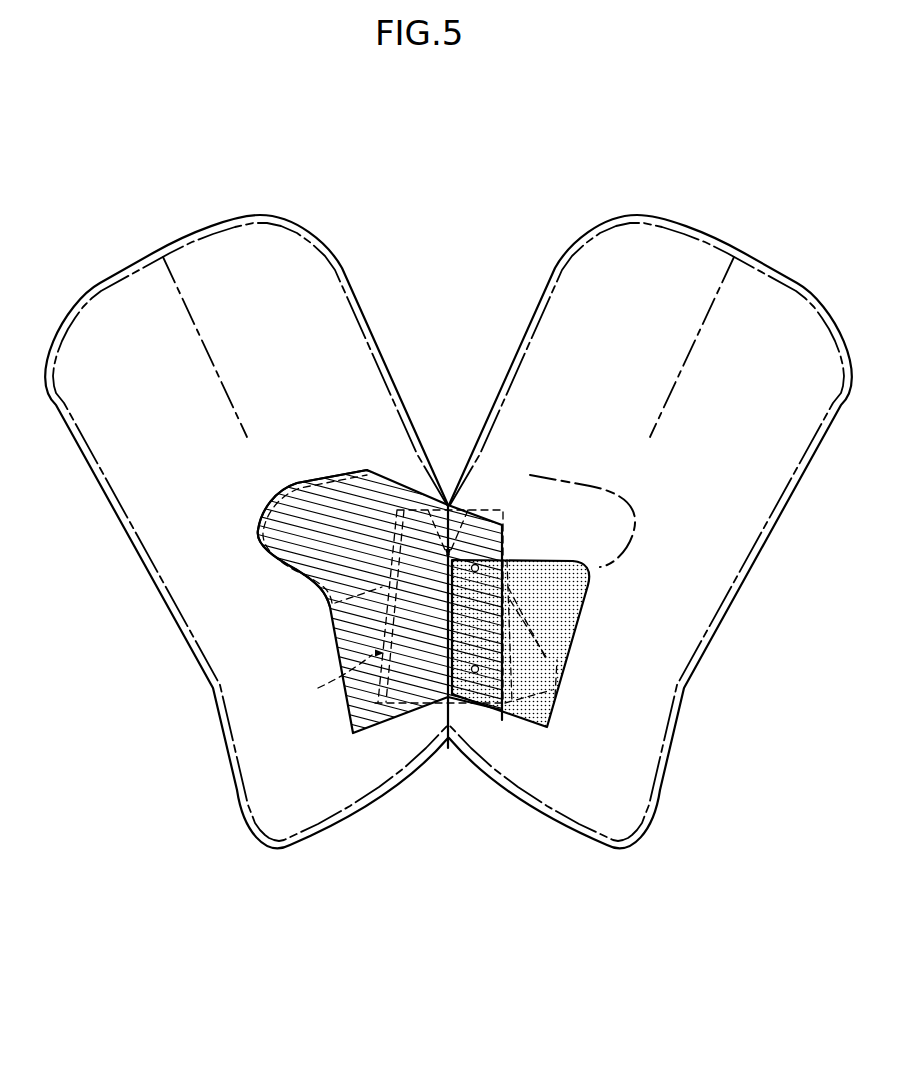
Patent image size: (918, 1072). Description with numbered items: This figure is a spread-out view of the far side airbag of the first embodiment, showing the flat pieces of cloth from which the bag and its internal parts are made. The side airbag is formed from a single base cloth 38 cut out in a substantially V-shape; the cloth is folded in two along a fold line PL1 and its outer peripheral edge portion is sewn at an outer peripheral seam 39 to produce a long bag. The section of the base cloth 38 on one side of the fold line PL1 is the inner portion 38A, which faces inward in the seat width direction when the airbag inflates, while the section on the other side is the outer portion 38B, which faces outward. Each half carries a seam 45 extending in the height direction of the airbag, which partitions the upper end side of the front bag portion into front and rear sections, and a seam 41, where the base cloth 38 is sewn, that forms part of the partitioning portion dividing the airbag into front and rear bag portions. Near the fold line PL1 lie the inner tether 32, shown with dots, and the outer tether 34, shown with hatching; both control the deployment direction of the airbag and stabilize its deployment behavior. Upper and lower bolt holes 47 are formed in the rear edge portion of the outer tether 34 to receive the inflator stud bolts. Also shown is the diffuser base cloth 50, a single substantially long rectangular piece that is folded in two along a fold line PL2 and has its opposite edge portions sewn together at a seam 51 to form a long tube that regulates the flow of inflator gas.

The base cloth 38 is at (448, 530).
The inner portion 38A is at (650, 502).
The outer portion 38B is at (248, 263).
The outer peripheral seam 39 is at (773, 277).
The seam 45 is at (212, 357).
The seam 41 is at (255, 527).
The outer tether 34 is at (327, 619).
The inner tether 32 is at (571, 623).
The bolt holes 47 is at (477, 565).
The seam 51 is at (335, 603).
The base cloth 50 is at (308, 678).
The fold line PL1 is at (455, 722).
The fold line PL2 is at (567, 667).